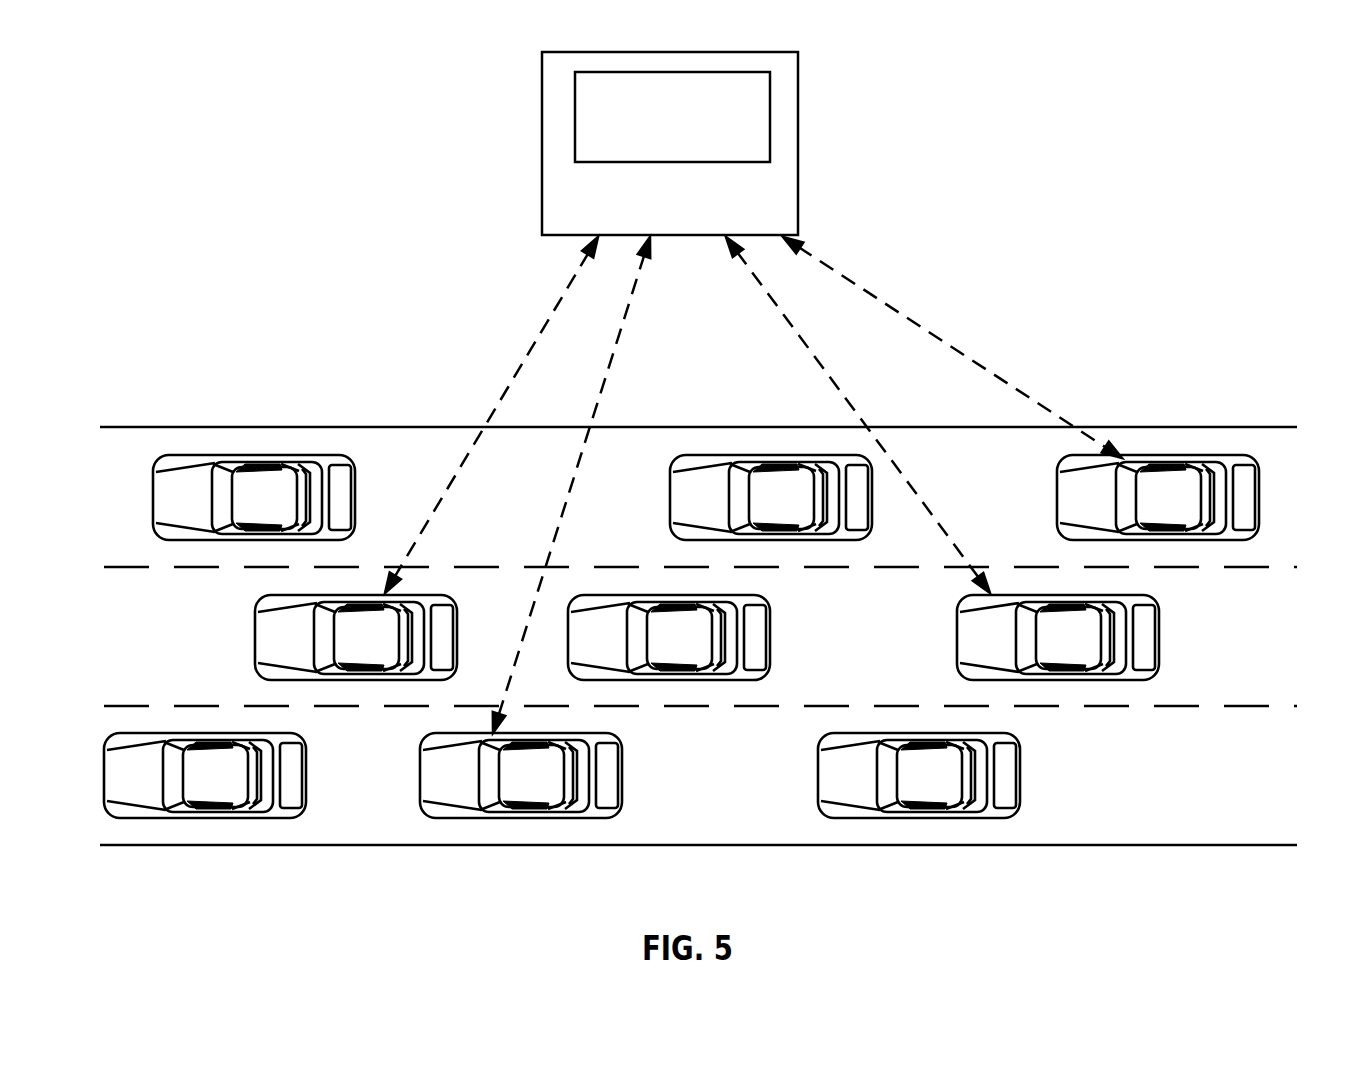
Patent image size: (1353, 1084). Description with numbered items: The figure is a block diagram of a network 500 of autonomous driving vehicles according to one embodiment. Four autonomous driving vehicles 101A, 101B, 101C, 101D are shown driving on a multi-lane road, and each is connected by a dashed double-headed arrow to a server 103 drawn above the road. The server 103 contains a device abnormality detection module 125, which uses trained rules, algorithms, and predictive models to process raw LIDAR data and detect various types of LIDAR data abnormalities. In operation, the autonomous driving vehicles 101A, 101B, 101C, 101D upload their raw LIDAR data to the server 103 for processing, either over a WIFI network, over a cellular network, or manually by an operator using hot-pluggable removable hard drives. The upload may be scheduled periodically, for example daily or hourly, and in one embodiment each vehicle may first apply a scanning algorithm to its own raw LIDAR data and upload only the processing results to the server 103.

The network 500 is at (698, 442).
The server 103 is at (654, 224).
The device abnormality detection module 125 is at (654, 156).
The autonomous driving vehicle 101A is at (342, 651).
The autonomous driving vehicle 101B is at (509, 791).
The autonomous driving vehicle 101C is at (1049, 651).
The autonomous driving vehicle 101D is at (1148, 511).